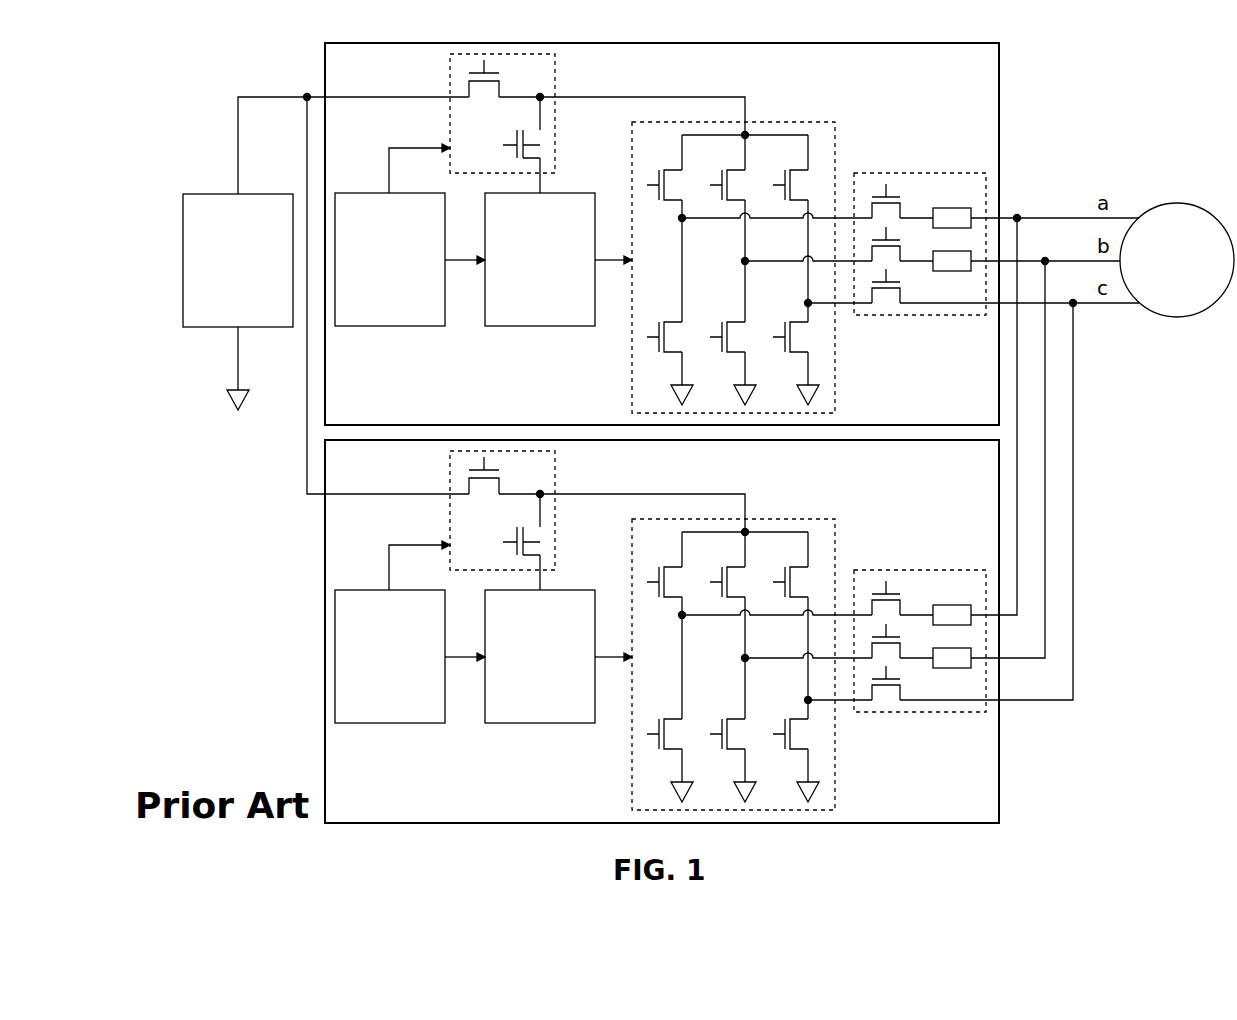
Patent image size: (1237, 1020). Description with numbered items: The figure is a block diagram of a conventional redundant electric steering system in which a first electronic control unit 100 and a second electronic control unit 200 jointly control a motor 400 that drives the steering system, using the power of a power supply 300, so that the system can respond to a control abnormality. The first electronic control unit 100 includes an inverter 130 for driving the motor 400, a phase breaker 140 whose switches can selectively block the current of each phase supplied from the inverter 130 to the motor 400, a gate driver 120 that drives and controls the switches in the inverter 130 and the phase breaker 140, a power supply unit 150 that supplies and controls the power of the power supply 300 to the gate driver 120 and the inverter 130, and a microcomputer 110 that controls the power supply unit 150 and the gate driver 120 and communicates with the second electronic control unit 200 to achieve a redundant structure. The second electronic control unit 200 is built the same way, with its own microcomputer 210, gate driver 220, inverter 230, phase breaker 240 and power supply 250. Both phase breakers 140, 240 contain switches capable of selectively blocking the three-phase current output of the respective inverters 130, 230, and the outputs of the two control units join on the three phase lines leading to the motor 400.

The first electronic control unit 100 is at (325, 53).
The microcomputer 110 is at (385, 327).
The gate driver 120 is at (535, 327).
The inverter 130 is at (808, 122).
The phase breaker 140 is at (913, 173).
The power supply unit 150 is at (555, 84).
The second electronic control unit 200 is at (325, 526).
The microcomputer 210 is at (385, 724).
The gate driver 220 is at (535, 724).
The inverter 230 is at (808, 519).
The phase breaker 240 is at (913, 570).
The power supply 250 is at (555, 481).
The power supply 300 is at (183, 262).
The motor 400 is at (1176, 203).